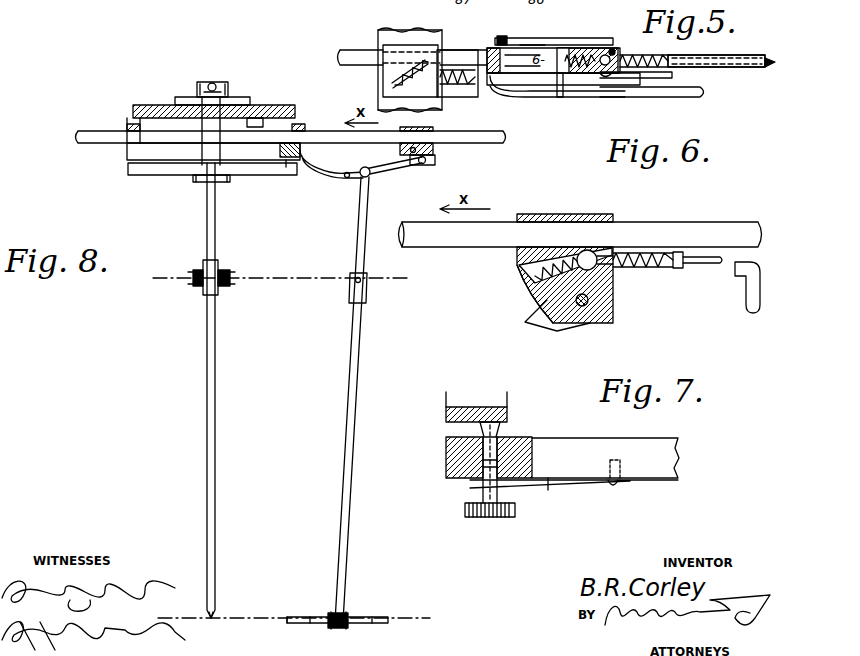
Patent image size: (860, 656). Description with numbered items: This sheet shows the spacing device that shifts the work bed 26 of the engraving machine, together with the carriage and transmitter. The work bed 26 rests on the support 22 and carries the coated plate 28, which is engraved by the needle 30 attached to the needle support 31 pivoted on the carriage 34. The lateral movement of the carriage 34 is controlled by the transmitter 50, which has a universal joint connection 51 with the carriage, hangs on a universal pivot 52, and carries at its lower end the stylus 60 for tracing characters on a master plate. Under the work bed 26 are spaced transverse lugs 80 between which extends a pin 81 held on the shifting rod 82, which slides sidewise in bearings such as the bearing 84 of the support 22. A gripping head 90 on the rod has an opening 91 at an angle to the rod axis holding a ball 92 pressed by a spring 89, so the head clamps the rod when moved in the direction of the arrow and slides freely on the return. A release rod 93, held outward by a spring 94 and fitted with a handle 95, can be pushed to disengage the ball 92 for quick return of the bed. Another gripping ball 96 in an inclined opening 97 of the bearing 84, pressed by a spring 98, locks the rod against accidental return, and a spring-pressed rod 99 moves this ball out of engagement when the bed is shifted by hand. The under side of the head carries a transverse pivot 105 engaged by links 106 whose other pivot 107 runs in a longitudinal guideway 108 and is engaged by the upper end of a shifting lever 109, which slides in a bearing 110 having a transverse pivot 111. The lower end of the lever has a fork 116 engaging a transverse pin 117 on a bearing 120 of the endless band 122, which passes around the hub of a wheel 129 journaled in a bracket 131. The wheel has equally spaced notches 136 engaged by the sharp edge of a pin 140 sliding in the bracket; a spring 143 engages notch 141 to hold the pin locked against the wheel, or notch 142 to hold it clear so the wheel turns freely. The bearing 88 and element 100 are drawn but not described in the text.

In FIG. 5, the support 22 is at (394, 30).
In FIG. 8, the support 22 is at (162, 160).
In FIG. 8, the work bed 26 is at (288, 102).
In FIG. 8, the coated plate 28 is at (184, 97).
In FIG. 8, the needle 30 is at (212, 82).
In FIG. 8, the needle support 31 is at (218, 85).
In FIG. 8, the carriage 34 is at (250, 175).
In FIG. 8, the transmitter 50 is at (207, 415).
In FIG. 8, the universal joint connection 51 is at (204, 182).
In FIG. 8, the universal pivot 52 is at (198, 273).
In FIG. 8, the stylus 60 is at (213, 614).
In FIG. 8, the transverse lugs 80 is at (247, 124).
In FIG. 8, the pin 81 is at (223, 112).
In FIG. 5, the shifting rod 82 is at (367, 52).
In FIG. 6, the shifting rod 82 is at (460, 247).
In FIG. 8, the shifting rod 82 is at (345, 143).
In FIG. 5, the bearing 84 is at (421, 45).
In FIG. 8, the bearing 84 is at (303, 128).
In FIG. 8, the block 88 is at (129, 126).
In FIG. 5, the spring 89 is at (580, 61).
In FIG. 6, the spring 89 is at (522, 266).
In FIG. 5, the gripping head 90 is at (585, 48).
In FIG. 6, the gripping head 90 is at (592, 210).
In FIG. 8, the gripping head 90 is at (430, 128).
In FIG. 6, the opening 91 is at (528, 278).
In FIG. 5, the ball 92 is at (610, 73).
In FIG. 6, the ball 92 is at (591, 252).
In FIG. 8, the ball 92 is at (427, 160).
In FIG. 5, the release rod 93 is at (575, 45).
In FIG. 6, the release rod 93 is at (676, 268).
In FIG. 5, the spring 94 is at (640, 55).
In FIG. 6, the spring 94 is at (641, 268).
In FIG. 5, the handle 95 is at (672, 75).
In FIG. 6, the handle 95 is at (748, 299).
In FIG. 5, the gripping ball 96 is at (774, 61).
In FIG. 8, the gripping ball 96 is at (320, 178).
In FIG. 8, the inclined opening 97 is at (287, 168).
In FIG. 5, the spring 98 is at (392, 82).
In FIG. 8, the spring 98 is at (279, 148).
In FIG. 5, the spring-pressed rod 99 is at (563, 88).
In FIG. 5, the curved tube 100 is at (540, 45).
In FIG. 5, the transverse pivot 105 is at (613, 47).
In FIG. 6, the transverse pivot 105 is at (585, 306).
In FIG. 8, the transverse pivot 105 is at (420, 164).
In FIG. 6, the links 106 is at (546, 328).
In FIG. 8, the links 106 is at (396, 168).
In FIG. 5, the pivot 107 is at (503, 36).
In FIG. 8, the pivot 107 is at (368, 176).
In FIG. 8, the longitudinal guideway 108 is at (347, 178).
In FIG. 8, the shifting lever 109 is at (361, 268).
In FIG. 8, the bearing 110 is at (366, 295).
In FIG. 8, the transverse pivot 111 is at (355, 279).
In FIG. 8, the fork 116 is at (340, 628).
In FIG. 8, the transverse pin 117 is at (333, 615).
In FIG. 8, the bearing 120 is at (350, 615).
In FIG. 8, the endless band 122 is at (382, 623).
In FIG. 7, the wheel 129 is at (485, 407).
In FIG. 7, the bracket 131 is at (592, 445).
In FIG. 7, the notches 136 is at (502, 423).
In FIG. 7, the pin 140 is at (500, 441).
In FIG. 7, the notch 141 is at (476, 485).
In FIG. 7, the notch 142 is at (446, 463).
In FIG. 7, the spring 143 is at (549, 481).